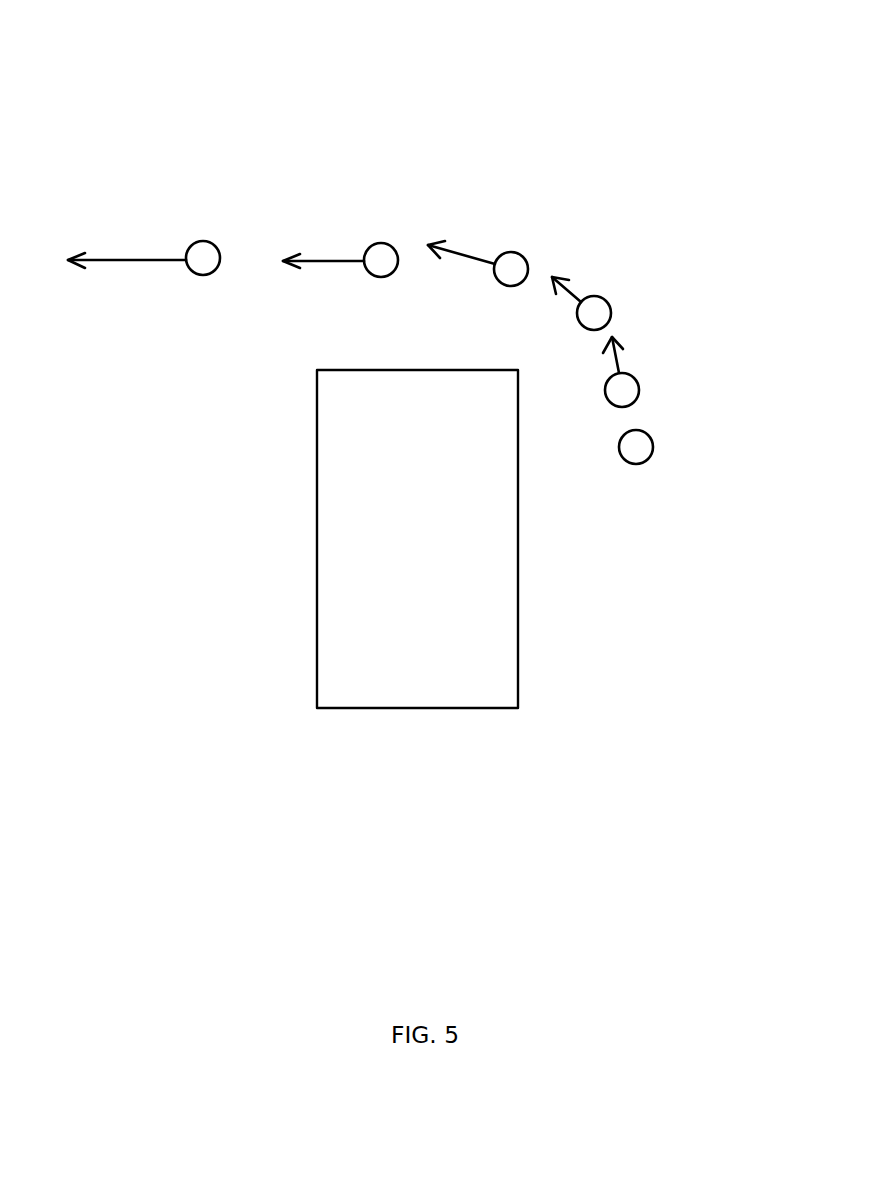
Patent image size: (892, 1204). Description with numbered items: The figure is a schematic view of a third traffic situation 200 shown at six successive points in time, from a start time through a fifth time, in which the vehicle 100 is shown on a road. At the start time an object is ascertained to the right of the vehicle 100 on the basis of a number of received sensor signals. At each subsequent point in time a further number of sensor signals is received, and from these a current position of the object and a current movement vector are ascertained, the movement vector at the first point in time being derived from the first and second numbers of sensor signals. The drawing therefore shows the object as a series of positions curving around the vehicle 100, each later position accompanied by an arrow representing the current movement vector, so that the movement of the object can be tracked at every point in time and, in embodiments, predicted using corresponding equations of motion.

The environment / tracking scenario 200 is at (465, 48).
The vehicle 100 is at (413, 708).